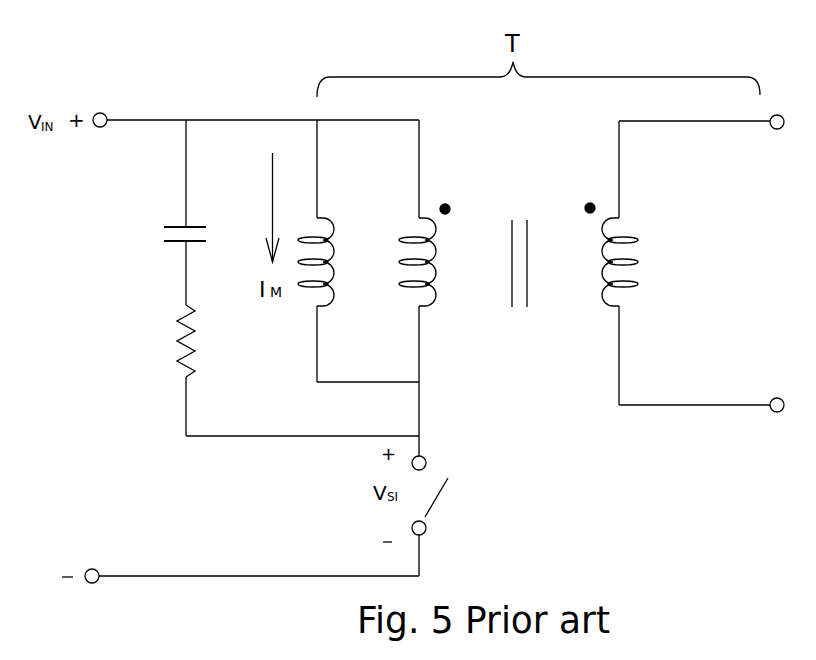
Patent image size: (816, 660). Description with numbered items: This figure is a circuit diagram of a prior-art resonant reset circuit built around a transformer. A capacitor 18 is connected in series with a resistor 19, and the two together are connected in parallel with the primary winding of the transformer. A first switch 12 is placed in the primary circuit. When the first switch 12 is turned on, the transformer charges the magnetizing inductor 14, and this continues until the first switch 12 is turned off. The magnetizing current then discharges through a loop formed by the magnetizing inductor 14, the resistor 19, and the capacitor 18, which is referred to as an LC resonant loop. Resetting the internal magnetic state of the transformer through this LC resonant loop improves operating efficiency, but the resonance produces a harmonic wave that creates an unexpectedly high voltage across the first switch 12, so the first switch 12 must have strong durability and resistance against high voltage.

The first switch 12 is at (437, 503).
The magnetizing inductor 14 is at (337, 222).
The capacitor 18 is at (163, 236).
The resistor 19 is at (175, 340).